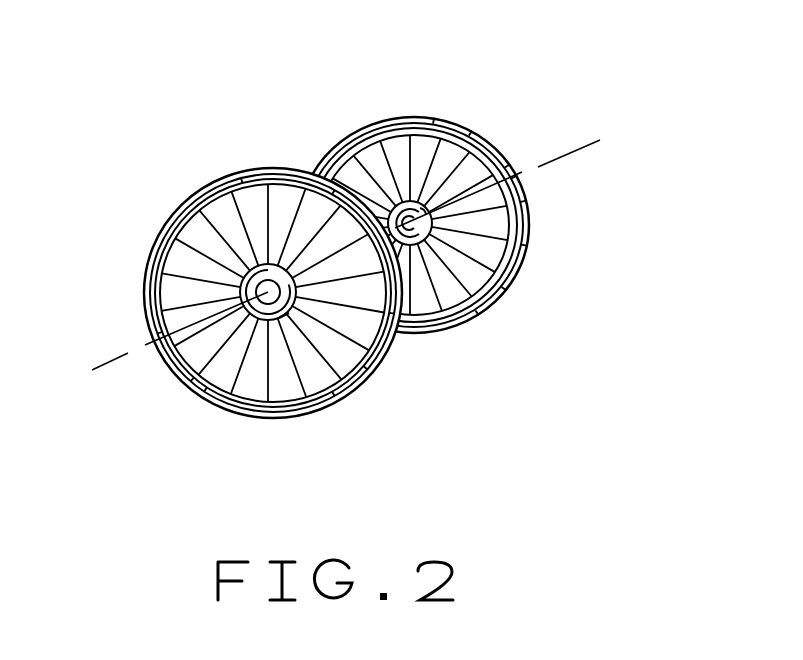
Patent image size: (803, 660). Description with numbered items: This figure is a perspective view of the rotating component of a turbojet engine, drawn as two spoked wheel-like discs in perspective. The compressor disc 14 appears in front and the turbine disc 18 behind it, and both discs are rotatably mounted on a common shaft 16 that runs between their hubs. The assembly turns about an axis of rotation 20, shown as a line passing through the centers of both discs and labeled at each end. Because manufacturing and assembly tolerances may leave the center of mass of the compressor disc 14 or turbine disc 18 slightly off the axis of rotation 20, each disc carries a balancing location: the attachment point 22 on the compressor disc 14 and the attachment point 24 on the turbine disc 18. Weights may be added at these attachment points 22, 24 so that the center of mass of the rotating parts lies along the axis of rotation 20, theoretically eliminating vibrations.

The compressor disc 14 is at (335, 400).
The shaft 16 is at (503, 277).
The turbine disc 18 is at (530, 218).
The axis of rotation 20 is at (122, 372).
The attachment point 22 is at (283, 317).
The attachment point 24 is at (418, 201).